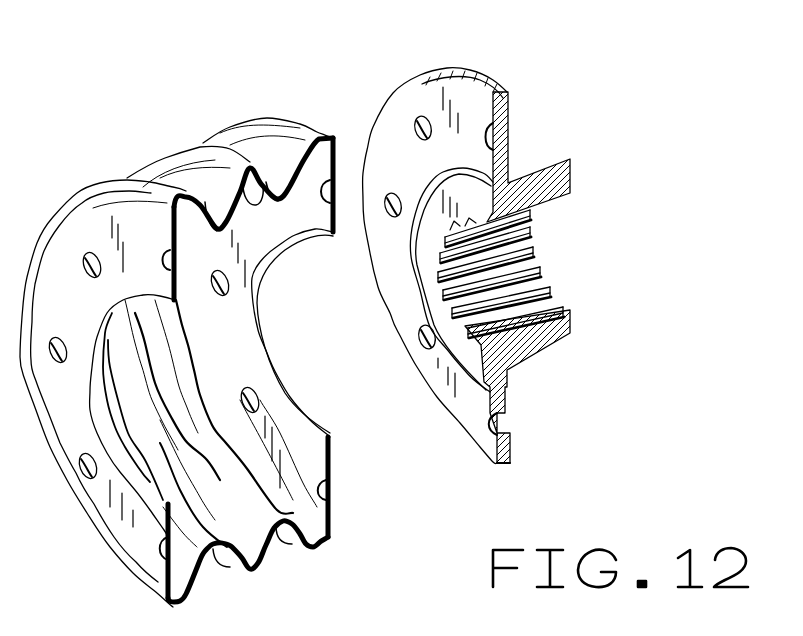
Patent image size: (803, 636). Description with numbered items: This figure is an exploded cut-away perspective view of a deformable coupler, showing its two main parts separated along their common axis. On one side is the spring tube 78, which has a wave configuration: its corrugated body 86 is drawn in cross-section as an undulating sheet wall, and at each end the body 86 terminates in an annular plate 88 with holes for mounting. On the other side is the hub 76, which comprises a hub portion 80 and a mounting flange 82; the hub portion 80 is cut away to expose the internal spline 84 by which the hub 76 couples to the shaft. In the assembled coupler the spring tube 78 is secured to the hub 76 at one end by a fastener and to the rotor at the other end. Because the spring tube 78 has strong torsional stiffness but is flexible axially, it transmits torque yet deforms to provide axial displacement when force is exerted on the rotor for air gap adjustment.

The hub 76 is at (540, 106).
The spring tube 78 is at (237, 101).
The hub portion 80 is at (547, 340).
The mounting flange 82 is at (507, 447).
The internal spline 84 is at (550, 297).
The body 86 is at (313, 543).
The annular plates 88 is at (330, 452).